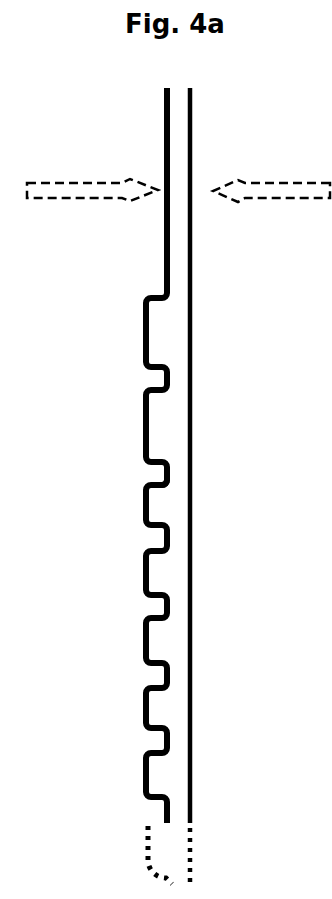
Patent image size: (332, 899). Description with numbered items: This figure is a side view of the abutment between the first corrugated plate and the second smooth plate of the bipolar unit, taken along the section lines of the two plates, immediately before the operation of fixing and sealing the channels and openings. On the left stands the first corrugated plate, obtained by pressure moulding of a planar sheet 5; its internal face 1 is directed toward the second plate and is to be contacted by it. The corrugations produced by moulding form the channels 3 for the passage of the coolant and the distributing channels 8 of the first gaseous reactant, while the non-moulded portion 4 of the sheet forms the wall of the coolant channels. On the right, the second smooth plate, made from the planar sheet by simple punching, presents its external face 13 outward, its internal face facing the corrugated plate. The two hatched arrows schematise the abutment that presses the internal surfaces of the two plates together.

The internal face of the first corrugated plate 1 is at (180, 140).
The external face of the second smooth plate 13 is at (203, 284).
The planar sheet 5 is at (154, 213).
The distributing channels of the first gaseous reactant 8 is at (135, 335).
The non-moulded portion of the planar sheet 4 is at (151, 480).
The channels for the passage of the coolant 3 is at (133, 573).